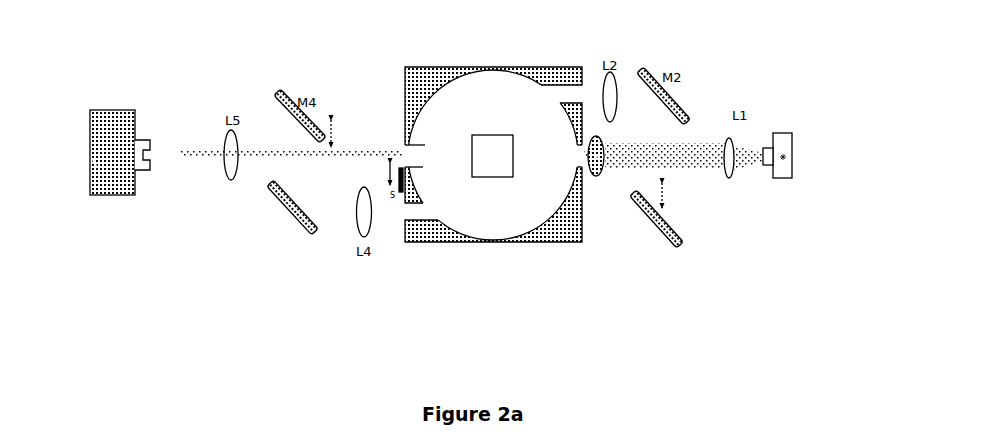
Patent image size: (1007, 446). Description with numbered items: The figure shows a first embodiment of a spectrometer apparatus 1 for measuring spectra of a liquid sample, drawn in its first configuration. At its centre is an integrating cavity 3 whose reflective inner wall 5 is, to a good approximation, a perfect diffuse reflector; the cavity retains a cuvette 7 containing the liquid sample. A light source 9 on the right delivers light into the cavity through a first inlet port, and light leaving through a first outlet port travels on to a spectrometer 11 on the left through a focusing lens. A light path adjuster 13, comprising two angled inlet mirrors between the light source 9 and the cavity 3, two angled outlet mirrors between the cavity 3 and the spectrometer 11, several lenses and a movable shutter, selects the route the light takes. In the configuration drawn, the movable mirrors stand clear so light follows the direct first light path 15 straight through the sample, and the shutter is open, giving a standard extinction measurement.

The spectrometer apparatus 1 is at (182, 290).
The integrating cavity 3 is at (507, 70).
The reflective inner wall 5 is at (452, 82).
The cuvette 7 is at (493, 135).
The light source 9 is at (790, 138).
The spectrometer 11 is at (95, 145).
The light path adjuster 13 is at (303, 268).
The first light path 15 is at (354, 151).